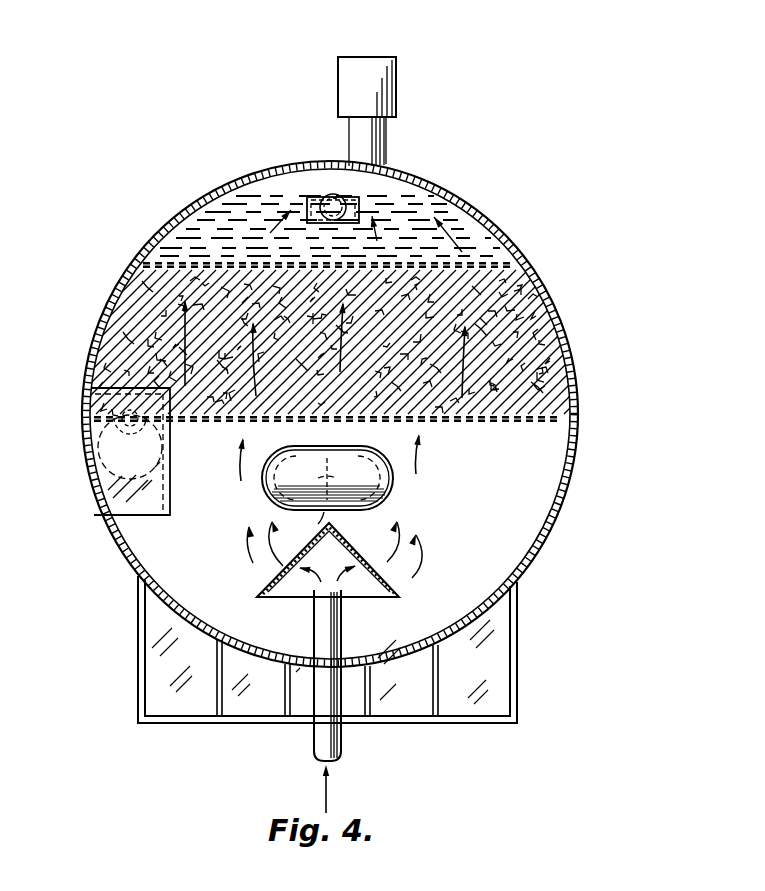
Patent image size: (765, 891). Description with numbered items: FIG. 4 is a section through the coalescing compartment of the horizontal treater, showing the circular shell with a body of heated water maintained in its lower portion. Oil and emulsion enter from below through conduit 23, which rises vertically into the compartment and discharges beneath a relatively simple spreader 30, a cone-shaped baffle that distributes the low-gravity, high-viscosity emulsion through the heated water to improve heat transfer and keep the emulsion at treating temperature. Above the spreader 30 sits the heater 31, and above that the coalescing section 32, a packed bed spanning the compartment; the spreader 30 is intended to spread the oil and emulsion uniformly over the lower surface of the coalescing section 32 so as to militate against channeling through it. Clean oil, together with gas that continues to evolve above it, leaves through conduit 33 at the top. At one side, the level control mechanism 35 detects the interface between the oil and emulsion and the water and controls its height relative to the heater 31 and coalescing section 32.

The conduit 23 is at (343, 746).
The spreader 30 is at (276, 574).
The heater 31 is at (392, 470).
The coalescing section 32 is at (535, 330).
The conduit 33 is at (331, 194).
The level control mechanism 35 is at (106, 445).